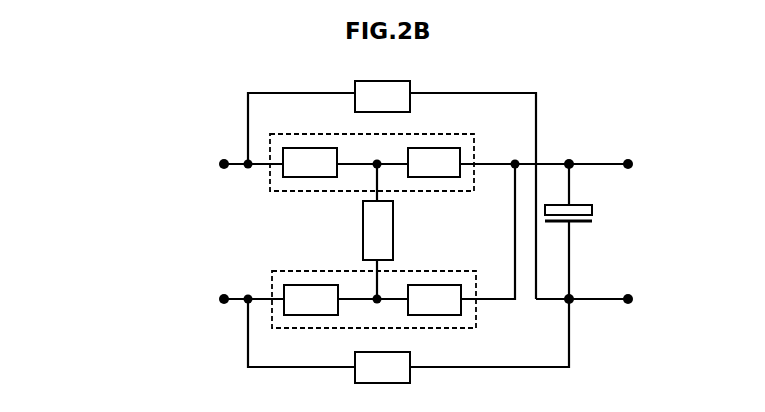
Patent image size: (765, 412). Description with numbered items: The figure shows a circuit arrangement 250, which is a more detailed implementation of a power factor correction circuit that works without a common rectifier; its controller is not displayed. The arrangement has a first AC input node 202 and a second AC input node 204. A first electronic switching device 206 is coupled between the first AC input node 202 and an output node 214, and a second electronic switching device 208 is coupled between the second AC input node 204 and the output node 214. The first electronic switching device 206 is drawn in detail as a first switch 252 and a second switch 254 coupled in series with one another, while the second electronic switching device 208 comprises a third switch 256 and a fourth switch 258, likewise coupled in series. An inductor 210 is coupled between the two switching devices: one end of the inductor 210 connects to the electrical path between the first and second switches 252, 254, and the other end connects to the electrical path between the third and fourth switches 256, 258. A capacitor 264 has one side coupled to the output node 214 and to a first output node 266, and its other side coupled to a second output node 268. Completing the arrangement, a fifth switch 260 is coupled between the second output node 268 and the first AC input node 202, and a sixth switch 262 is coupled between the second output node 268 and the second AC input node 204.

The circuit arrangement 250 is at (113, 148).
The first AC input node 202 is at (221, 158).
The second AC input node 204 is at (223, 293).
The first electronic switching device 206 is at (279, 192).
The second electronic switching device 208 is at (344, 272).
The inductor 210 is at (396, 223).
The output node 214 is at (572, 159).
The first switch 252 is at (310, 162).
The second switch 254 is at (434, 162).
The third switch 256 is at (311, 300).
The fourth switch 258 is at (434, 300).
The fifth switch 260 is at (382, 96).
The sixth switch 262 is at (382, 367).
The capacitor 264 is at (594, 218).
The first output node 266 is at (634, 160).
The second output node 268 is at (633, 296).